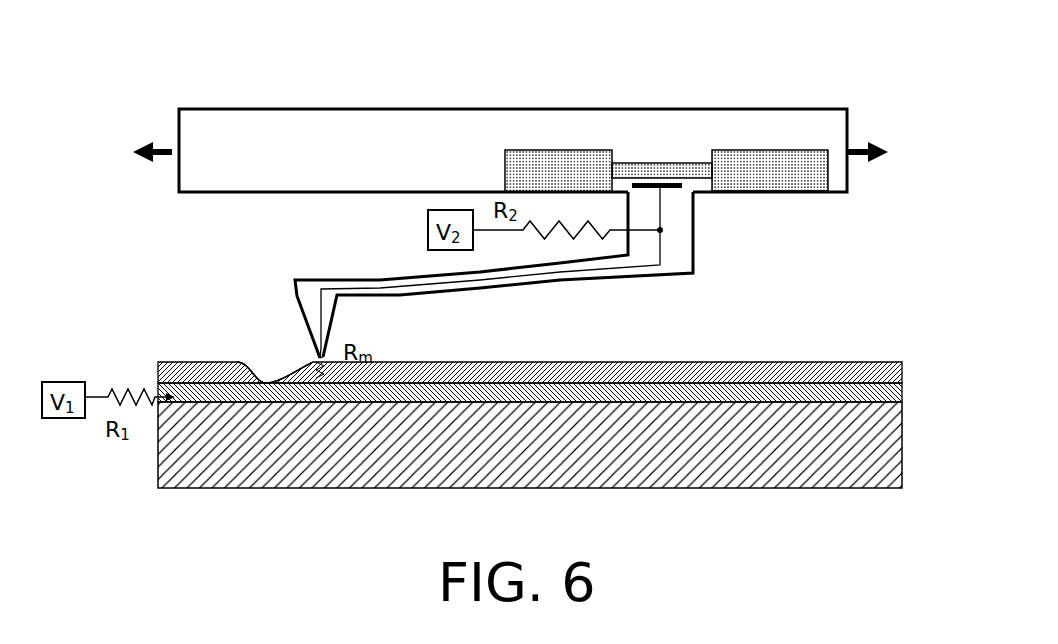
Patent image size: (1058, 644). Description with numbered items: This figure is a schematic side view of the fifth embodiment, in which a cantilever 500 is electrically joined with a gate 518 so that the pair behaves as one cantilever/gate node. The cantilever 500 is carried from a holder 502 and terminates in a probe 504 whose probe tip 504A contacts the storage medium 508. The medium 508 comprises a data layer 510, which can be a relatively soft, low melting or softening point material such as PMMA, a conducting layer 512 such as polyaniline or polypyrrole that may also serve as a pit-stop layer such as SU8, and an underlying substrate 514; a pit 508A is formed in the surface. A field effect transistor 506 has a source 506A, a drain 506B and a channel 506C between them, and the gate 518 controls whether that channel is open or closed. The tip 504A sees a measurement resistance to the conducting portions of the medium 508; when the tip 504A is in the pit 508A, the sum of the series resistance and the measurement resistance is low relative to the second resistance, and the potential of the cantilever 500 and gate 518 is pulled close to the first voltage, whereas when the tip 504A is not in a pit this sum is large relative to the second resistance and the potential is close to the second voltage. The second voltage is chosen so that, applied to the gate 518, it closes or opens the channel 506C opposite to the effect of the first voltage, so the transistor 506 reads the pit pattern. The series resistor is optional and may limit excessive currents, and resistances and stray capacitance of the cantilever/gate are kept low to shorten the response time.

The cantilever 500 is at (438, 273).
The probe holder 502 is at (265, 128).
The cantilever 504 is at (325, 328).
The probe tip 504A is at (257, 312).
The field effect transistor 506 is at (603, 108).
The source 506A is at (517, 153).
The drain 506B is at (782, 153).
The channel 506C is at (668, 163).
The sample 508 is at (530, 387).
The surface depression 508A is at (268, 370).
The data layer 510 is at (695, 362).
The conducting layer 512 is at (770, 385).
The substrate 514 is at (748, 477).
The gate 518 is at (677, 188).